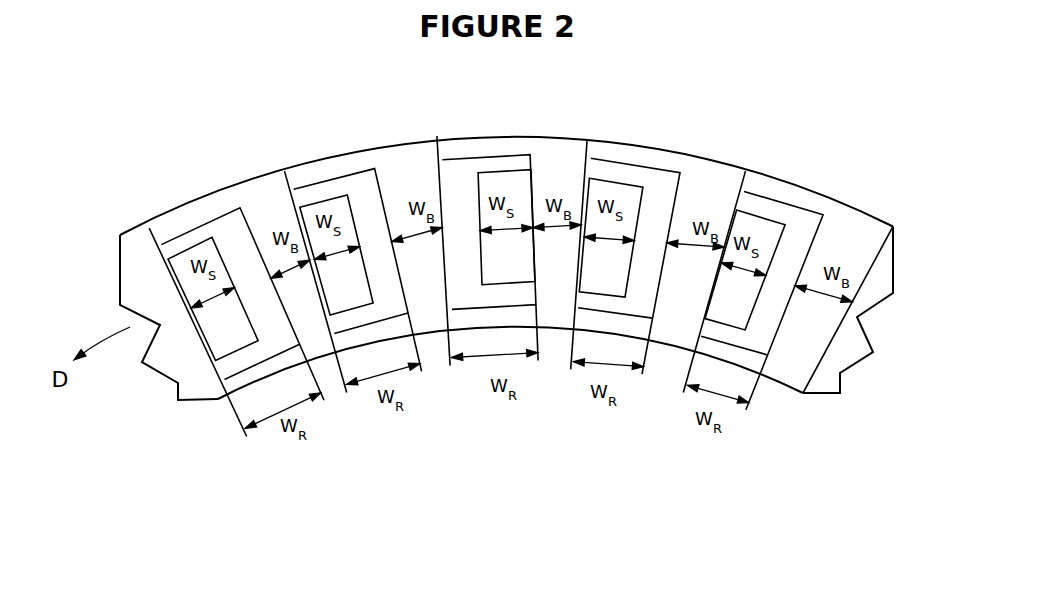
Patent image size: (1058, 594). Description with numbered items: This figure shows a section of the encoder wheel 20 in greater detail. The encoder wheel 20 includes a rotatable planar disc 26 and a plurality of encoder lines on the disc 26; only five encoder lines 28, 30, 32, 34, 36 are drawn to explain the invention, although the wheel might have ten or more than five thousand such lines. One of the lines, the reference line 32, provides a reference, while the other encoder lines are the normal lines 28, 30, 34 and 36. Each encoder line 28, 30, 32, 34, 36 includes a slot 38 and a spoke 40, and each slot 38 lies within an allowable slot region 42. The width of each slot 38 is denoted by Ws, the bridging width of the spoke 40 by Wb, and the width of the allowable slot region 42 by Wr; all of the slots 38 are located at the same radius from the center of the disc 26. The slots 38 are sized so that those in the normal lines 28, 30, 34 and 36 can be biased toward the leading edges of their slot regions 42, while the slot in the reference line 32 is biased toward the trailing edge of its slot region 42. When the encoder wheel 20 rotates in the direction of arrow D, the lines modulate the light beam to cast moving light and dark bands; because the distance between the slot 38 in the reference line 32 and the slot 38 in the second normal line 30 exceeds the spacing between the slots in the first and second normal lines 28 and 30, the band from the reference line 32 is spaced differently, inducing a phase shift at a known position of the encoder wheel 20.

The encoder wheel 20 is at (574, 468).
The rotatable planar disc 26 is at (876, 350).
The first normal line 28 is at (147, 222).
The second normal line 30 is at (380, 148).
The reference line 32 is at (516, 137).
The normal line 34 is at (652, 148).
The normal line 36 is at (798, 185).
The slot 38 is at (217, 335).
The spoke 40 is at (272, 203).
The allowable slot region 42 is at (233, 240).